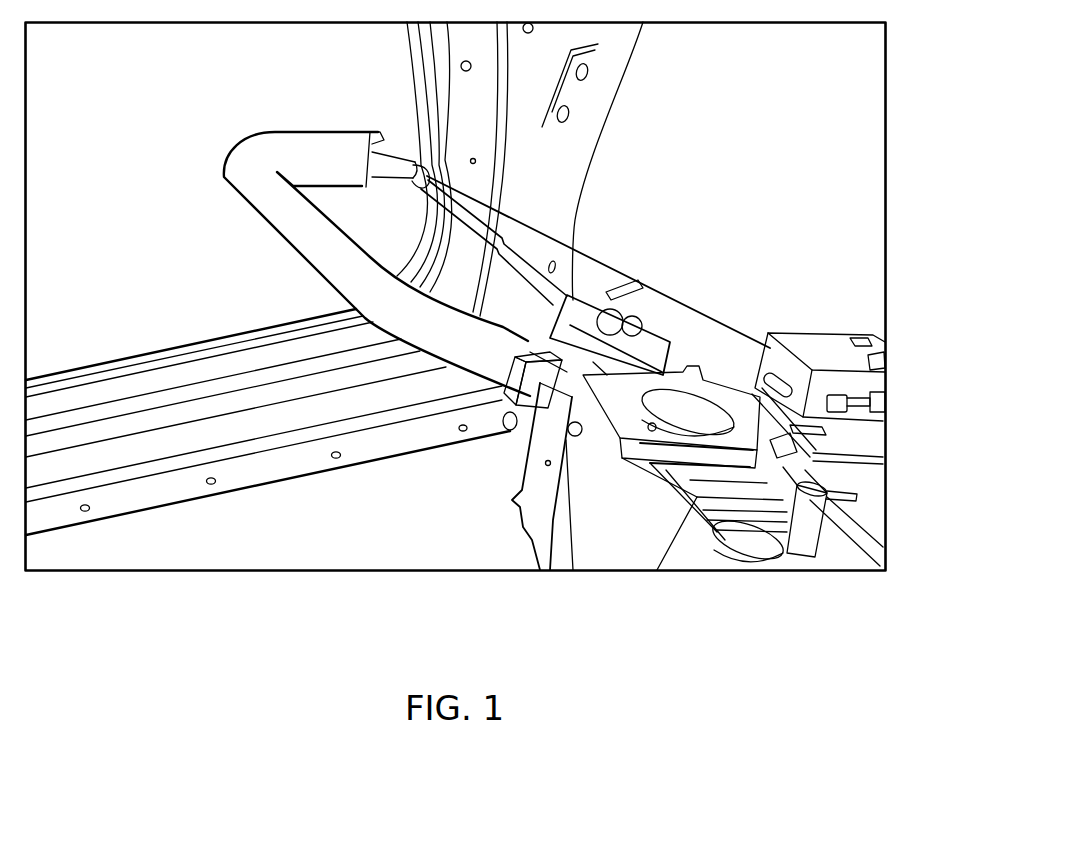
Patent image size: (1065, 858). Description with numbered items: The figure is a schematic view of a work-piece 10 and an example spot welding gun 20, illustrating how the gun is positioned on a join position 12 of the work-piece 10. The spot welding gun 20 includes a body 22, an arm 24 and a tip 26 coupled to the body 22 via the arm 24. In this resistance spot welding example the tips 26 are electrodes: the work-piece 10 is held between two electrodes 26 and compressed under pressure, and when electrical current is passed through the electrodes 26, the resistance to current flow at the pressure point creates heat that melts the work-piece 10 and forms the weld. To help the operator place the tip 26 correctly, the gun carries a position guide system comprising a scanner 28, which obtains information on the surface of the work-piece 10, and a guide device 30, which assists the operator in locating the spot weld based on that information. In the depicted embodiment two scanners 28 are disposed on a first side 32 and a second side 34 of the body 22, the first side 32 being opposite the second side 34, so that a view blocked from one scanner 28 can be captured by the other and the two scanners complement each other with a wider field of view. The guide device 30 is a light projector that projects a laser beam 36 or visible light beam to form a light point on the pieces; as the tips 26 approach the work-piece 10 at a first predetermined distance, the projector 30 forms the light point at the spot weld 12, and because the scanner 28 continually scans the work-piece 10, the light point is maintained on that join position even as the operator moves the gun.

The work-piece 10 is at (306, 483).
The join position 12 is at (418, 160).
The spot welding gun 20 is at (704, 269).
The body 22 is at (613, 539).
The arm 24 is at (307, 253).
The tip 26 is at (450, 183).
The scanner 28 is at (522, 358).
The guide device 30 is at (770, 352).
The first side 32 is at (523, 493).
The second side 34 is at (878, 352).
The laser beam 36 is at (618, 285).